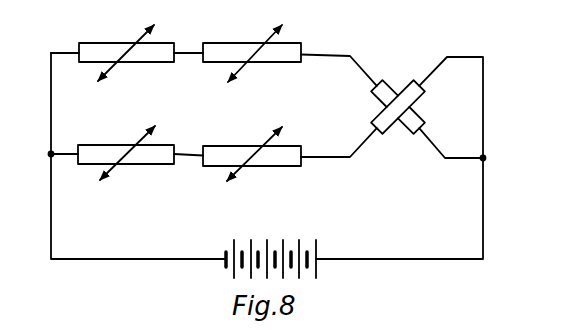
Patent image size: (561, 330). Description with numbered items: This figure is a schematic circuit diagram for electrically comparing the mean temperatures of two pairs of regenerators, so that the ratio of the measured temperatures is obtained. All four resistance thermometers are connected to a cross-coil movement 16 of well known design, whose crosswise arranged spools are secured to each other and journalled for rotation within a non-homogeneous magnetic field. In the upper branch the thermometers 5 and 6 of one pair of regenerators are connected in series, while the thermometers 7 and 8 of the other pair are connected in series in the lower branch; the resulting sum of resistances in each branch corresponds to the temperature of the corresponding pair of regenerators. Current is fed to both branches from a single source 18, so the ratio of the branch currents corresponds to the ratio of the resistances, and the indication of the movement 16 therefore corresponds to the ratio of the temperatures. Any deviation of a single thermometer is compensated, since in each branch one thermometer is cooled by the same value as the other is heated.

The thermometer 5 is at (126, 50).
The thermometer 6 is at (252, 52).
The thermometer 7 is at (126, 152).
The thermometer 8 is at (252, 153).
The cross-coil movement 16 is at (398, 86).
The source 18 is at (271, 247).